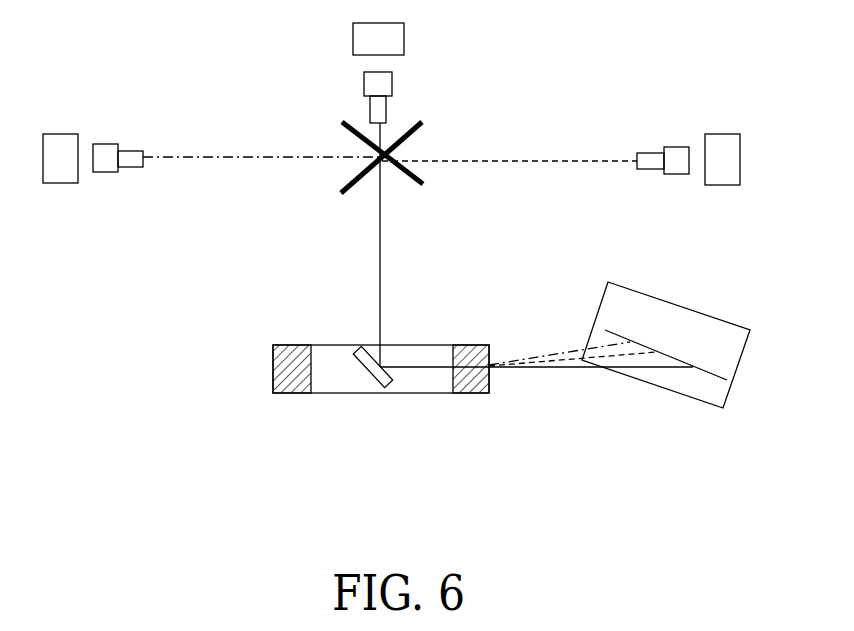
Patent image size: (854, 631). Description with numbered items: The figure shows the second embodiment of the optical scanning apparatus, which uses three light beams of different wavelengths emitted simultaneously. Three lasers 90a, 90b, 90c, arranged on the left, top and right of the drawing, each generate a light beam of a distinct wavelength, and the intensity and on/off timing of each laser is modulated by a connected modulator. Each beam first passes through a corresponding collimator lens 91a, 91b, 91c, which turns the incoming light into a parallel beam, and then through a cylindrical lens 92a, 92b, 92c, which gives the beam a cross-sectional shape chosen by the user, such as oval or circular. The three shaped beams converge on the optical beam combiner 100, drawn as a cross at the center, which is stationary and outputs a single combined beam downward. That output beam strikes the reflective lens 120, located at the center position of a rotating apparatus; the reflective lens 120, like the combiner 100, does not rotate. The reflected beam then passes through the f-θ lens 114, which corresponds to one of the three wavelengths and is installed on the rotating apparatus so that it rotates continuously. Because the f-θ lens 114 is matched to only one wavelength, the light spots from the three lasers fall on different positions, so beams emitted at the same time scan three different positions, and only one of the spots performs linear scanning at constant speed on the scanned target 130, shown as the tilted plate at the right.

The optical beam combiner 100 is at (350, 184).
The laser 90a is at (720, 173).
The collimator lens 91a is at (682, 165).
The cylindrical lens 92a is at (657, 162).
The laser 90b is at (404, 36).
The collimator lens 91b is at (385, 79).
The cylindrical lens 92b is at (386, 108).
The laser 90c is at (58, 178).
The collimator lens 91c is at (107, 167).
The cylindrical lens 92c is at (132, 167).
The f-θ lens 114 is at (478, 392).
The reflective lens 120 is at (375, 370).
The scanned target 130 is at (728, 360).